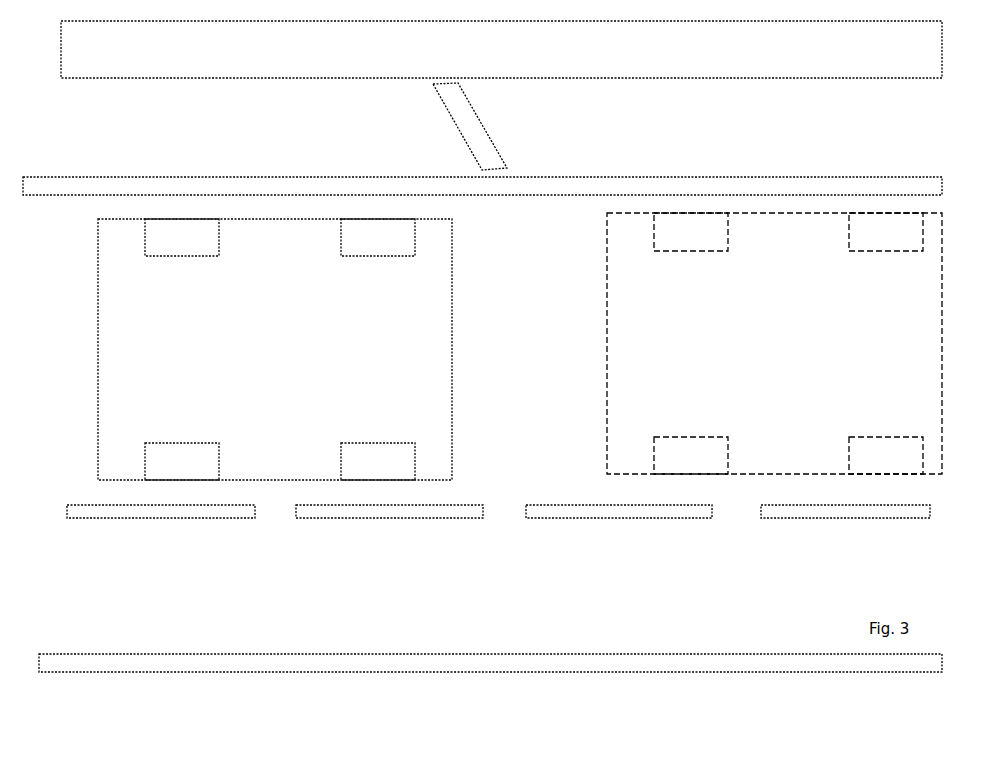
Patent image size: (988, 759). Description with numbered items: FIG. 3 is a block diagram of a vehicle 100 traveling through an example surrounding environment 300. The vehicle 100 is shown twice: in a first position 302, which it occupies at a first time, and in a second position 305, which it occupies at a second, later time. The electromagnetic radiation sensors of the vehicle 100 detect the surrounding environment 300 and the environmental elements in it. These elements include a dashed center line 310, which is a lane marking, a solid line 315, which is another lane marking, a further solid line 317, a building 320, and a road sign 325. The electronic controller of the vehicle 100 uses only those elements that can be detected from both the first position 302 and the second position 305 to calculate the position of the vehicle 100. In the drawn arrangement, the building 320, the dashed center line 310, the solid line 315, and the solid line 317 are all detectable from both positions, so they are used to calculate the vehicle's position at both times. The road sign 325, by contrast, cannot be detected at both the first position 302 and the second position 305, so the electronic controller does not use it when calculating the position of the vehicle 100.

The vehicle 100 is at (97, 350).
The surrounding environment 300 is at (482, 346).
The first position 302 is at (275, 350).
The second position 305 is at (784, 344).
The dashed center line 310 is at (390, 517).
The solid line 315 is at (482, 195).
The solid line 317 is at (490, 654).
The building 320 is at (501, 49).
The road sign 325 is at (483, 124).